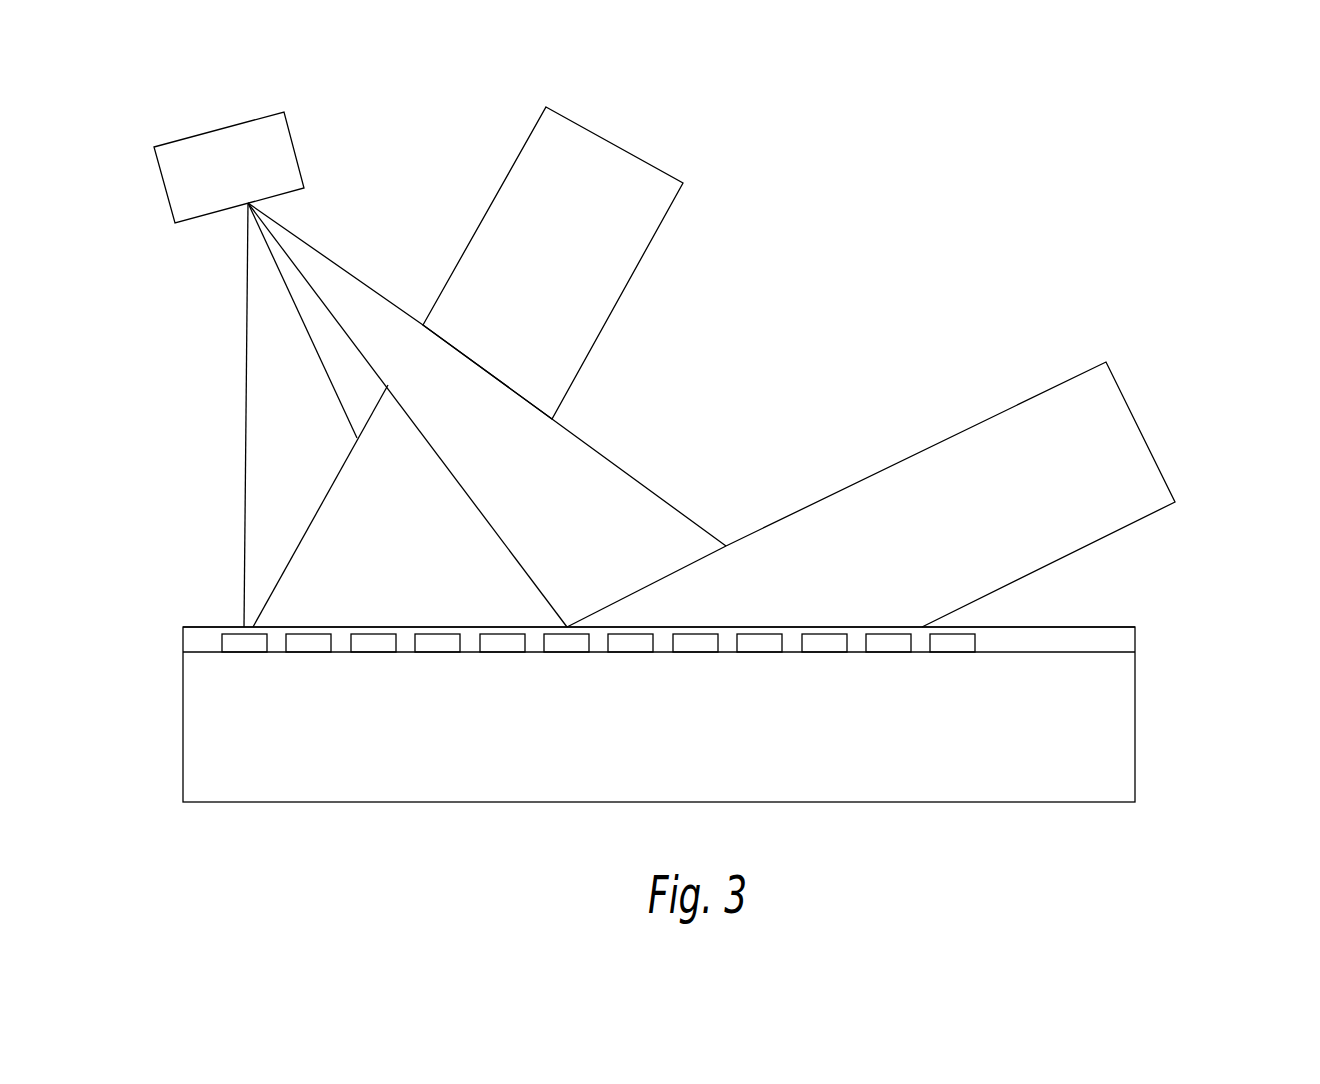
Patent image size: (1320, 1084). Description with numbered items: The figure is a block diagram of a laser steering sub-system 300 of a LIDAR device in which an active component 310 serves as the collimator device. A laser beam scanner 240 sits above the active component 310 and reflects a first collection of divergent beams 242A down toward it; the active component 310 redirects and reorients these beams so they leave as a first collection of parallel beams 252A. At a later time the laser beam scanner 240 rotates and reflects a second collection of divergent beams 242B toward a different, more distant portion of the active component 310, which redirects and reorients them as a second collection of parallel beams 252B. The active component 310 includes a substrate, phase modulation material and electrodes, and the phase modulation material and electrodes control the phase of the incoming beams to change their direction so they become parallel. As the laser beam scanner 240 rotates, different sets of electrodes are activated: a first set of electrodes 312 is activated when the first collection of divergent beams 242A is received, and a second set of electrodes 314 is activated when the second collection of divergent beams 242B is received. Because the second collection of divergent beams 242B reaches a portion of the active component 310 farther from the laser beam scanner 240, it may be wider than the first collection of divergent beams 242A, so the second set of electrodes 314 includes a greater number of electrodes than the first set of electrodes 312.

The laser steering sub-system 300 is at (1166, 111).
The laser beam scanner 240 is at (221, 130).
The first collection of divergent beams 242A is at (243, 413).
The second collection of divergent beams 242B is at (333, 261).
The first collection of parallel beams 252A is at (615, 145).
The second collection of parallel beams 252B is at (1140, 428).
The active component 310 is at (1105, 627).
The first set of electrodes 312 is at (310, 634).
The second set of electrodes 314 is at (697, 627).